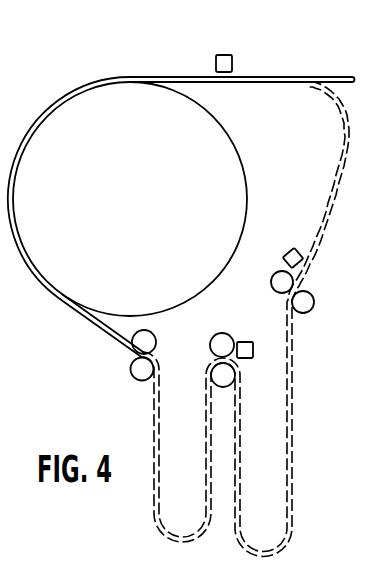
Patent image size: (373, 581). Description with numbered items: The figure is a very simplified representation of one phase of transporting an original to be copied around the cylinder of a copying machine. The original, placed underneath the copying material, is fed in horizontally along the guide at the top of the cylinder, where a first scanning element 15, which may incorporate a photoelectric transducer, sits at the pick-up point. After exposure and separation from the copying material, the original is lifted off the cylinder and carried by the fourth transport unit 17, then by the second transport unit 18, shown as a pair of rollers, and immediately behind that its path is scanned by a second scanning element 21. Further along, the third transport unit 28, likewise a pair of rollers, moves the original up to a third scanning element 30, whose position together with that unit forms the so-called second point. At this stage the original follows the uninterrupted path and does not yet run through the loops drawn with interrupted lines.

The first scanning element 15 is at (226, 55).
The fourth transport unit 17 is at (133, 376).
The second transport unit 18 is at (235, 376).
The second scanning element 21 is at (248, 342).
The third transport unit 28 is at (313, 307).
The third scanning element 30 is at (295, 248).